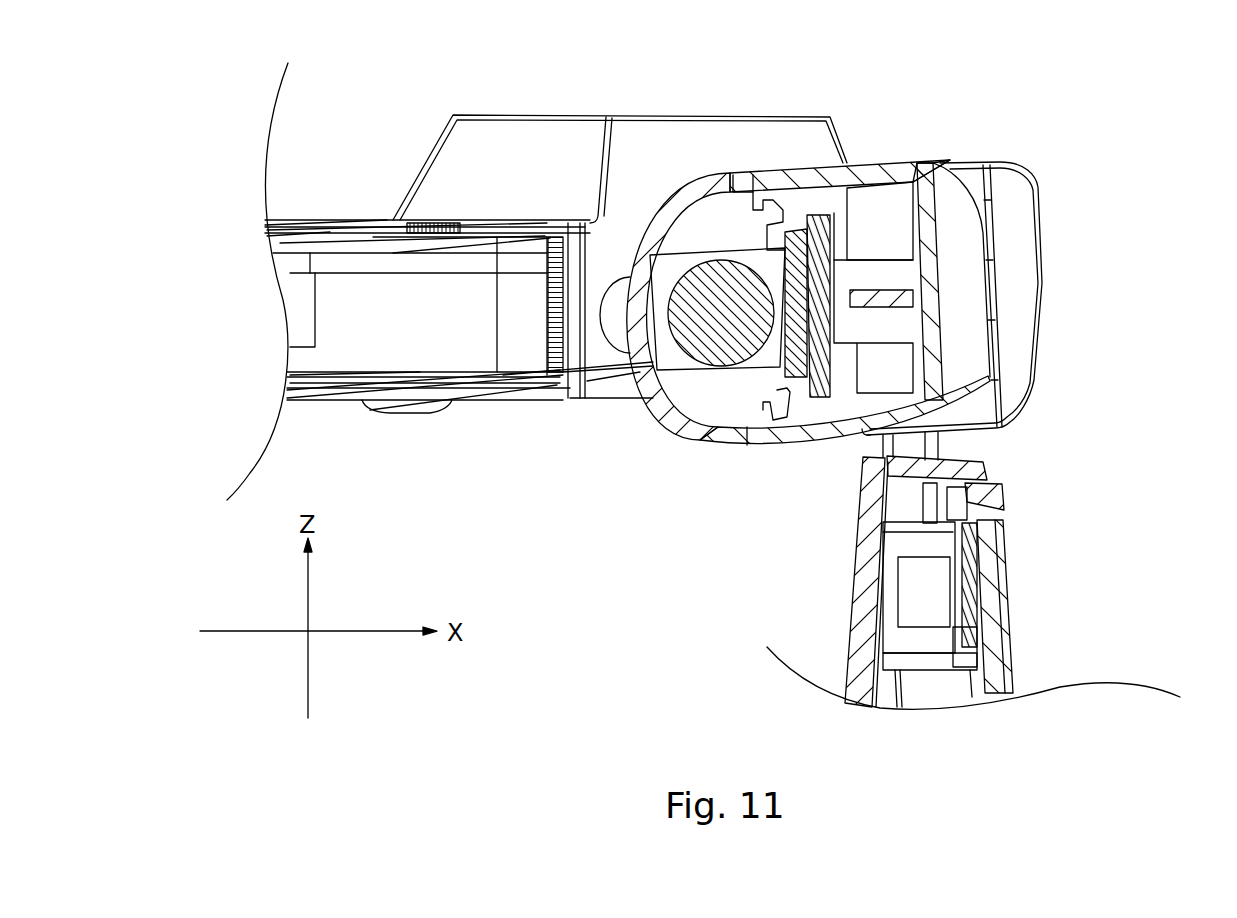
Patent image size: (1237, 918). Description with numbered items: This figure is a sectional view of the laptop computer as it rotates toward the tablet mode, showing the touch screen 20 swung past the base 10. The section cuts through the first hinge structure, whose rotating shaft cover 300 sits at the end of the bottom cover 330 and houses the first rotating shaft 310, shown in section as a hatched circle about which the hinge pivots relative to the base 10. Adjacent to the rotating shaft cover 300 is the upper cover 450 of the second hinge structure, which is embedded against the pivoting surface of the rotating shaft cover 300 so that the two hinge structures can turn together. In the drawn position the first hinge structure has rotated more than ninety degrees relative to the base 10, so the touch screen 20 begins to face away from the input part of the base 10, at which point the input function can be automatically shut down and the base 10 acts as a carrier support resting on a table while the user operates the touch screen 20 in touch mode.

The touch screen 20 is at (350, 192).
The rotating shaft cover 300 is at (903, 172).
The first rotating shaft 310 is at (717, 300).
The bottom cover 330 is at (667, 430).
The upper cover 450 is at (1047, 247).
The base 10 is at (1043, 583).